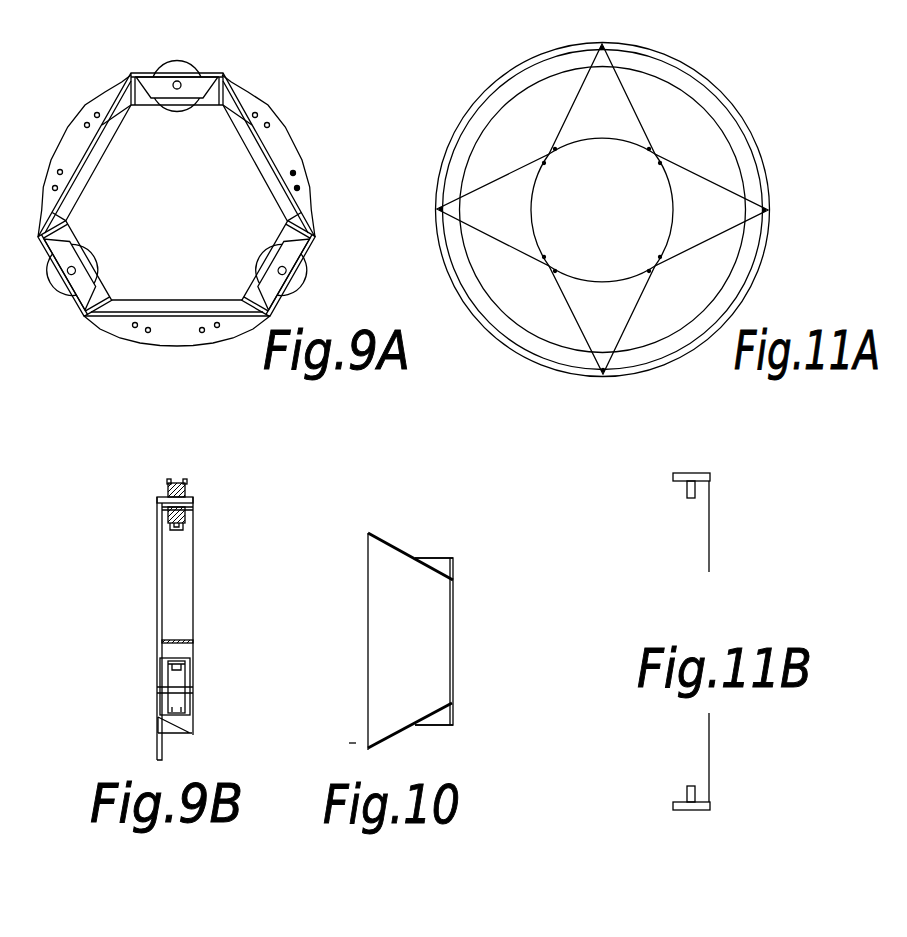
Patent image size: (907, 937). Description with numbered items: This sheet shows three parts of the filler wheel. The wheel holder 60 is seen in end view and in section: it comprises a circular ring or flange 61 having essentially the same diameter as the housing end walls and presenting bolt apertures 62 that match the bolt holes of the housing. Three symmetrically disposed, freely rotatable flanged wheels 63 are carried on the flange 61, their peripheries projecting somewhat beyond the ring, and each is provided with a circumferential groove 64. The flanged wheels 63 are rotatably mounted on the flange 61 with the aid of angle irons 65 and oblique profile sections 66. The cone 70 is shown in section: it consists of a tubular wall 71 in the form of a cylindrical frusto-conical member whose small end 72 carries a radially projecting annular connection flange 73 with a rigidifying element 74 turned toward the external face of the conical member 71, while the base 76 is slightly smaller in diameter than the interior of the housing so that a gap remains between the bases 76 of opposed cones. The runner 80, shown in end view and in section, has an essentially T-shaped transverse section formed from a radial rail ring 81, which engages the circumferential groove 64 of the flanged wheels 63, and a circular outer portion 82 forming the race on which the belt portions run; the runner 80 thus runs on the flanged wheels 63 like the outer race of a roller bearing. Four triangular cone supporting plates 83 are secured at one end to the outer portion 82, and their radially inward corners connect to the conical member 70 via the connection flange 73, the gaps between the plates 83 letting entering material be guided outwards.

In FIG. 9A, the wheel holder 60 is at (184, 186).
In FIG. 9B, the wheel holder 60 is at (178, 605).
In FIG. 9A, the circular ring or flange 61 is at (275, 120).
In FIG. 9B, the circular ring or flange 61 is at (157, 596).
In FIG. 9A, the bolt apertures 62 is at (298, 188).
In FIG. 9A, the flanged wheels 63 is at (174, 63).
In FIG. 9B, the flanged wheels 63 is at (186, 486).
In FIG. 9B, the circumferential grooves 64 is at (176, 480).
In FIG. 9B, the angle irons 65 is at (176, 737).
In FIG. 9A, the oblique profile sections 66 is at (163, 308).
In FIG. 9B, the oblique profile sections 66 is at (187, 728).
In FIG. 10, the cone 70 is at (420, 637).
In FIG. 10, the tubular wall 71 is at (393, 552).
In FIG. 10, the small end 72 is at (446, 663).
In FIG. 10, the annular connection flange 73 is at (455, 560).
In FIG. 10, the rigidifying element 74 is at (436, 727).
In FIG. 10, the base 76 is at (368, 663).
In FIG. 11A, the runner 80 is at (621, 210).
In FIG. 11B, the runner 80 is at (710, 631).
In FIG. 11A, the radial rail ring 81 is at (742, 148).
In FIG. 11B, the radial rail ring 81 is at (687, 492).
In FIG. 11A, the circular outer portion 82 is at (745, 293).
In FIG. 11B, the circular outer portion 82 is at (692, 473).
In FIG. 11A, the triangular cone supporting plates 83 is at (636, 113).
In FIG. 11B, the triangular cone supporting plates 83 is at (710, 525).